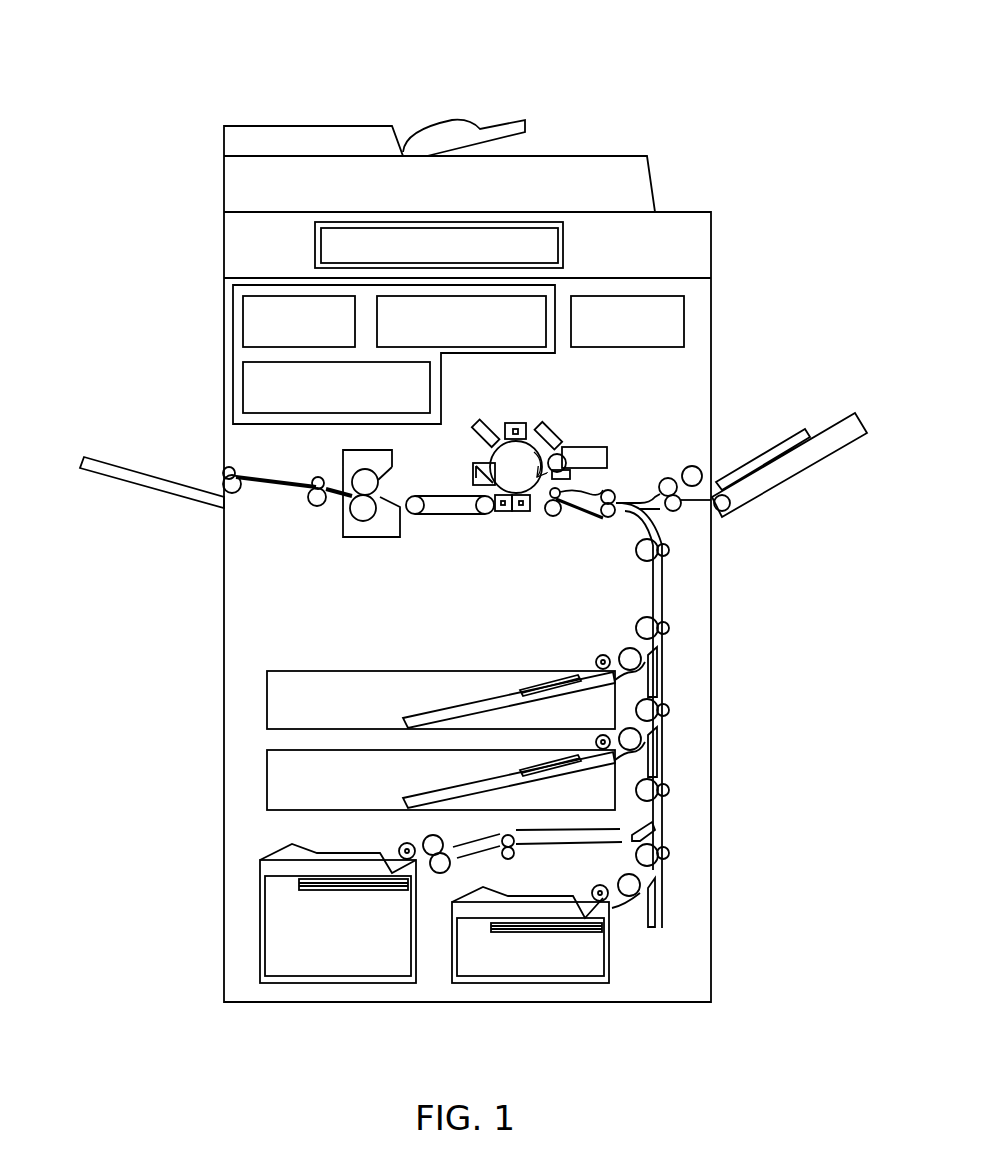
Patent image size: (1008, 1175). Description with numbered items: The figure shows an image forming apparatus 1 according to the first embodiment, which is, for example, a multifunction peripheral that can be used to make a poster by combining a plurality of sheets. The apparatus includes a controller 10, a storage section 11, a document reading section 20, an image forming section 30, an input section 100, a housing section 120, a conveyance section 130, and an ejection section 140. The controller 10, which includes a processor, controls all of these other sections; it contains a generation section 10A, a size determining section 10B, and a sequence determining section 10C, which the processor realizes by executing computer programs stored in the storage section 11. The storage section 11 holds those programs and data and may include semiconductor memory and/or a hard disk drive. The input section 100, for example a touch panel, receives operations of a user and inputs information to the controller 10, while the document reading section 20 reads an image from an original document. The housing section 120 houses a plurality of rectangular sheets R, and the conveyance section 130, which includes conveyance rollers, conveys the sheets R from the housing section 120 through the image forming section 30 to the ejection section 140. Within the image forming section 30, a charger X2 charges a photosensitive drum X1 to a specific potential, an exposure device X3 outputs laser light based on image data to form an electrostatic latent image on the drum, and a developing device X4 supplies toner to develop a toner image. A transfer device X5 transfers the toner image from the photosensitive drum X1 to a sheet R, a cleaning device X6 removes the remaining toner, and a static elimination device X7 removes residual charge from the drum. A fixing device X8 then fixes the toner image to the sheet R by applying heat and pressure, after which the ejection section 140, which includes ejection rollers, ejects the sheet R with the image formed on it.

The image forming apparatus 1 is at (499, 90).
The controller 10 is at (366, 354).
The generation section 10A is at (268, 296).
The size determining section 10B is at (538, 349).
The sequence determining section 10C is at (282, 424).
The storage section 11 is at (684, 312).
The document reading section 20 is at (711, 234).
The image forming section 30 is at (533, 477).
The input section 100 is at (563, 245).
The housing section 120 is at (282, 827).
The conveyance section 130 is at (676, 596).
The ejection section 140 is at (213, 470).
The photosensitive drum X1 is at (505, 460).
The charger X2 is at (512, 422).
The exposure device X3 is at (560, 428).
The developing device X4 is at (607, 455).
The transfer device X5 is at (528, 505).
The cleaning device X6 is at (473, 476).
The static elimination device X7 is at (480, 421).
The fixing device X8 is at (385, 537).
The sheet R is at (100, 457).